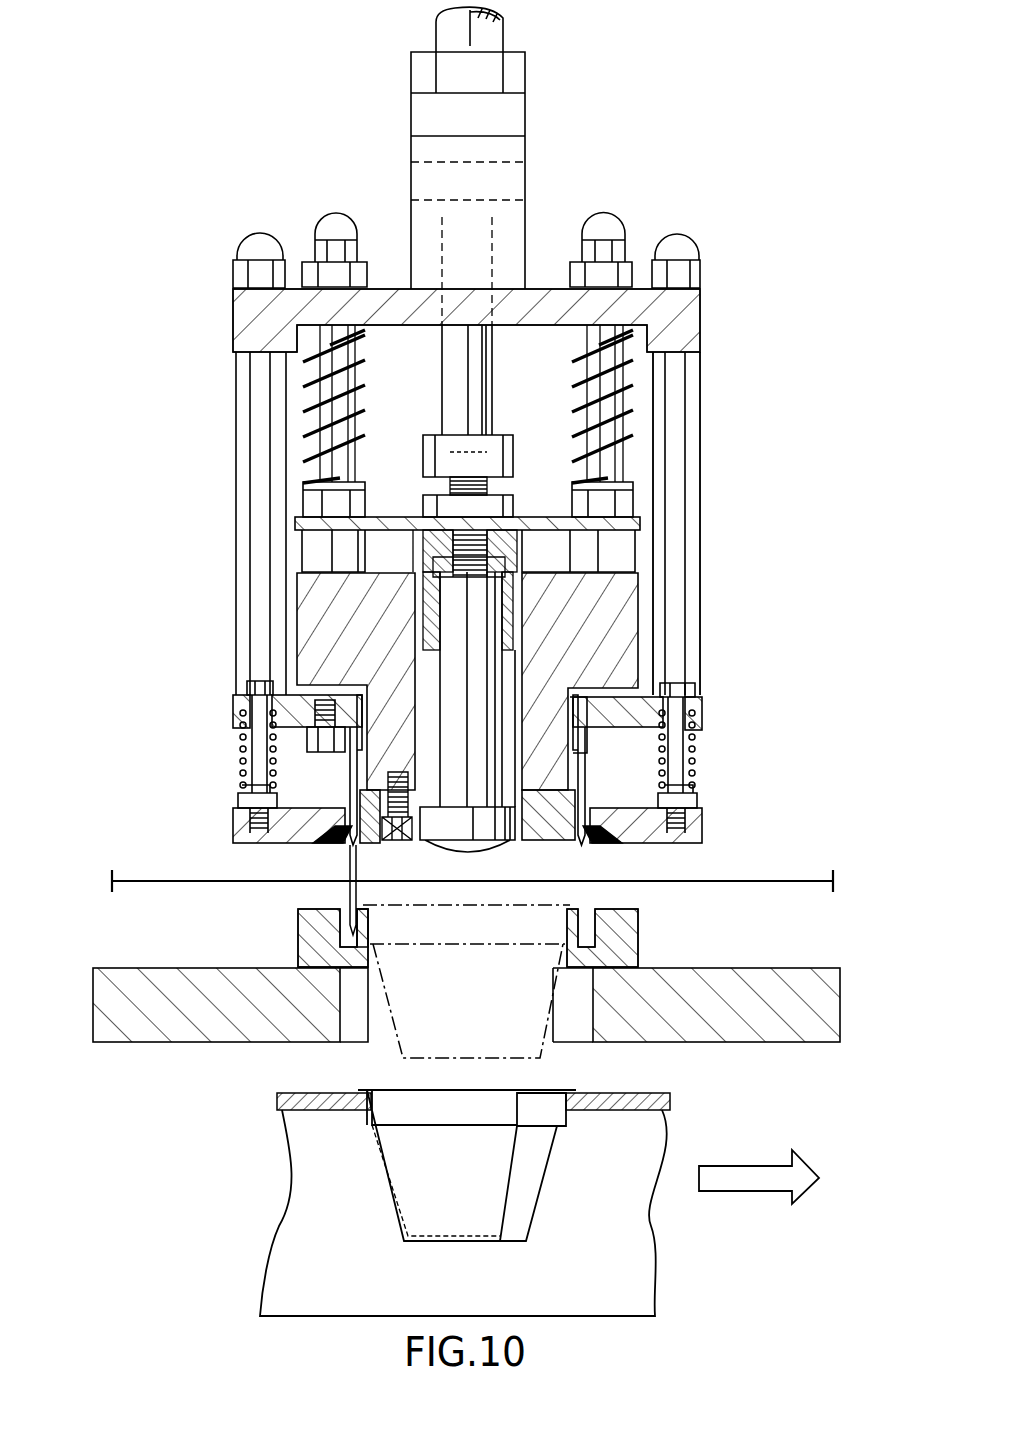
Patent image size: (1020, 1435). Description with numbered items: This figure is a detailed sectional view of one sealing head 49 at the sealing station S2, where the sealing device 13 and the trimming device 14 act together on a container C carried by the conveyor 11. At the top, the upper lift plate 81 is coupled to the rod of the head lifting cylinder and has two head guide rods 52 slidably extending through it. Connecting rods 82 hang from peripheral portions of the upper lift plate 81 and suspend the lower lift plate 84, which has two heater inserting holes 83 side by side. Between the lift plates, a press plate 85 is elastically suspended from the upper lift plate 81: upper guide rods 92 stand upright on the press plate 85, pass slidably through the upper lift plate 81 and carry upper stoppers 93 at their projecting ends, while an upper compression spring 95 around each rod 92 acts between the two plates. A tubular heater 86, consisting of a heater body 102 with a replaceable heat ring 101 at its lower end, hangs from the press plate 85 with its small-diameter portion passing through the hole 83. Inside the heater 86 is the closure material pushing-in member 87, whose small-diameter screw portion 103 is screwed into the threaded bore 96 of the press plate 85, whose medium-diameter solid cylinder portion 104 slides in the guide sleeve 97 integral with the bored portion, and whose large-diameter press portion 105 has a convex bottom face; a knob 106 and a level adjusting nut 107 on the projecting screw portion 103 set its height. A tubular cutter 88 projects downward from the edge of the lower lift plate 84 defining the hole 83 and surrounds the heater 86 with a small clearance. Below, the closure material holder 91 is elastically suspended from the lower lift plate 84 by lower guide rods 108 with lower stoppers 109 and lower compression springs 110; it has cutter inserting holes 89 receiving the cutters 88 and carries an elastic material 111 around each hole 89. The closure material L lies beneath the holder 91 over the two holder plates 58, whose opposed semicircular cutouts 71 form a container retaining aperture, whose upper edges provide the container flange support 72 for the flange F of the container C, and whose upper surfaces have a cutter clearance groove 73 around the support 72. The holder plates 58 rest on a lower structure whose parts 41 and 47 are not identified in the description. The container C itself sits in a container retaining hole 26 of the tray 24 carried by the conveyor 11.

The sealing station S2 is at (675, 190).
The upper stopper 93 is at (570, 277).
The upper lift plate 81 is at (693, 303).
The head guide rods 52 is at (442, 370).
The upper compression spring 95 is at (572, 345).
The upper guide rods 92 is at (580, 383).
The connecting rods 82 is at (241, 390).
The sealing device 13 is at (740, 442).
The trimming device 14 is at (745, 495).
The knob 106 is at (433, 432).
The small-diameter screw portion 103 is at (450, 482).
The level adjusting nut 107 is at (513, 497).
The press plate 85 is at (640, 522).
The threaded bore 96 is at (455, 542).
The guide sleeve 97 is at (428, 602).
The solid cylinder portion 104 is at (448, 672).
The closure material pushing-in member 87 is at (537, 628).
The heater inserting hole 83 is at (500, 667).
The tubular heater 86 is at (643, 603).
The heater body 102 is at (295, 626).
The sealing head 49 is at (702, 633).
The heat ring 101 is at (570, 843).
The lower stopper 109 is at (241, 689).
The lower guide rods 108 is at (253, 758).
The lower compression spring 110 is at (242, 768).
The tubular cutter 88 is at (353, 780).
The large-diameter press portion 105 is at (457, 847).
The lower lift plate 84 is at (702, 702).
The closure material holder 91 is at (700, 808).
The elastic material 111 is at (595, 848).
The cutter inserting hole 89 is at (592, 807).
The closure material L is at (780, 880).
The cutter clearance groove 73 is at (352, 910).
The holder plate 58 is at (298, 950).
The lower die 47 is at (657, 930).
The table 41 is at (743, 973).
The container flange support 72 is at (557, 905).
The semicircular cutout 71 is at (385, 950).
The flange F is at (557, 1091).
The tray 24 is at (282, 1123).
The container retaining hole 26 is at (568, 1102).
The container C is at (393, 1232).
The conveyor 11 is at (227, 1211).